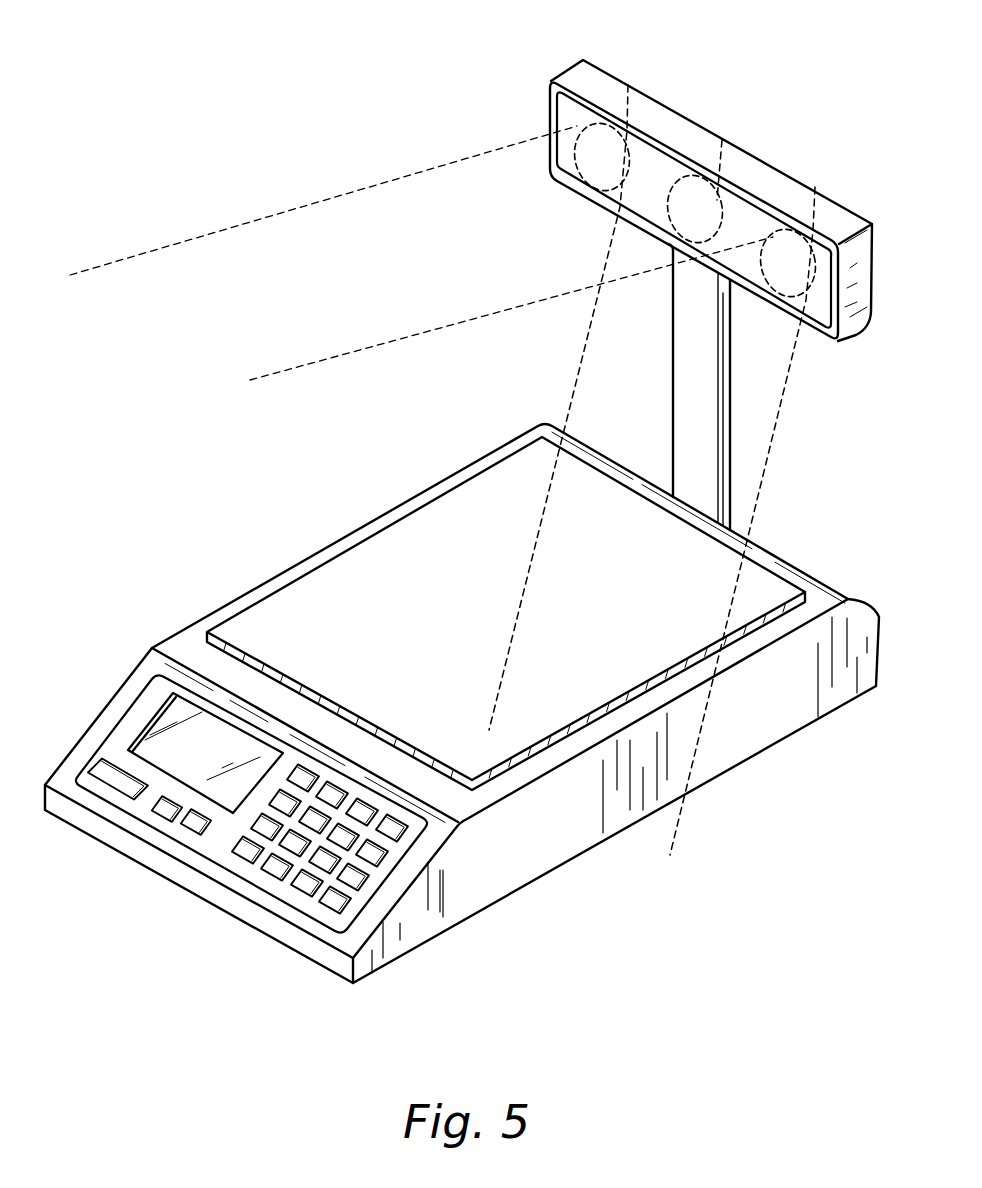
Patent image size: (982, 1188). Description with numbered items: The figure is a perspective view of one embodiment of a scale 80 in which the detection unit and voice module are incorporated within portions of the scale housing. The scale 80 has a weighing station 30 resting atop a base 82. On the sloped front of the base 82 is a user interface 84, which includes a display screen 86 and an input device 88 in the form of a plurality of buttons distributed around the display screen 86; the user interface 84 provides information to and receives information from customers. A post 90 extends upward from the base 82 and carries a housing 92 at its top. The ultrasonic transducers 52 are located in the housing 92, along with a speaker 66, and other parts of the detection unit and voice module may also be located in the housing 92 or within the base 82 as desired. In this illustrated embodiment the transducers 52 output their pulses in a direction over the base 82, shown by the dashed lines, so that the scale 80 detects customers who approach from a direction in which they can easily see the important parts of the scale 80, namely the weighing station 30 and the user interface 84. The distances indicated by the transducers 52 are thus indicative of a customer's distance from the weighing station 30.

The scale 80 is at (283, 188).
The housing 92 is at (577, 75).
The ultrasonic transducers 52 is at (628, 85).
The speaker 66 is at (722, 140).
The post 90 is at (716, 396).
The base 82 is at (518, 820).
The weighing station 30 is at (403, 587).
The user interface 84 is at (127, 707).
The display screen 86 is at (217, 751).
The input device 88 is at (275, 891).